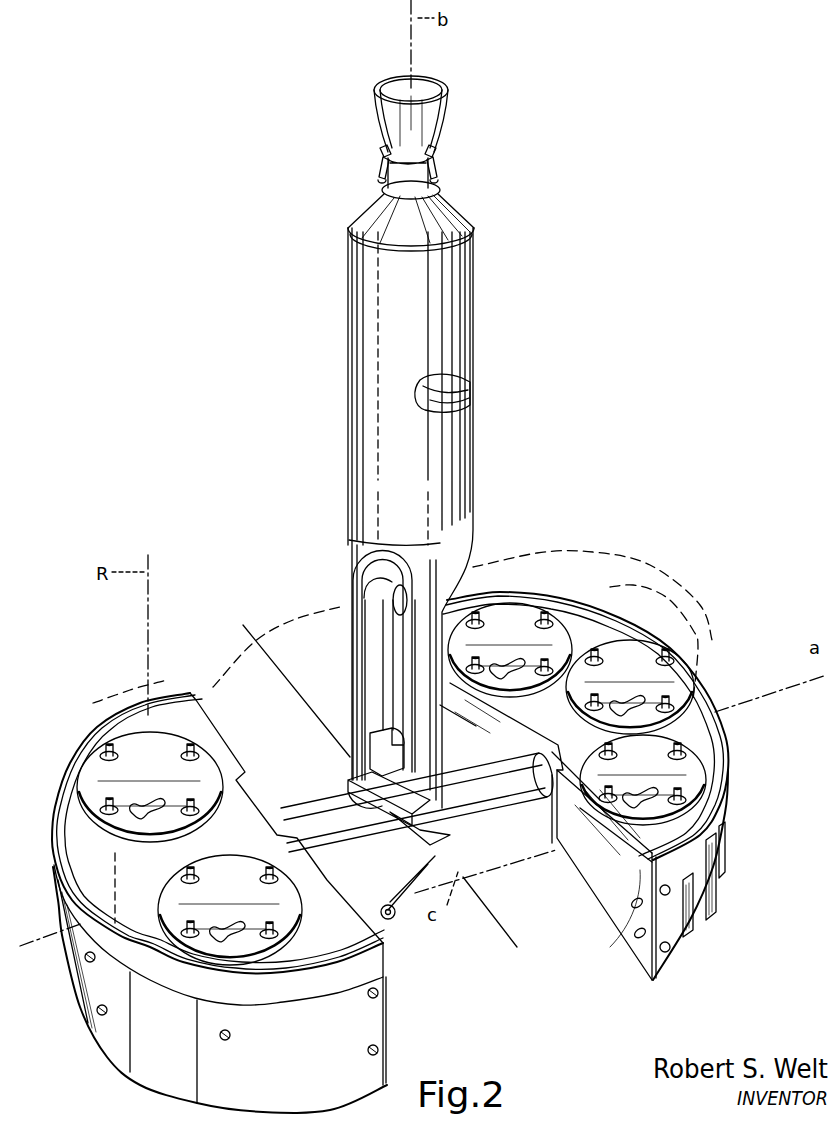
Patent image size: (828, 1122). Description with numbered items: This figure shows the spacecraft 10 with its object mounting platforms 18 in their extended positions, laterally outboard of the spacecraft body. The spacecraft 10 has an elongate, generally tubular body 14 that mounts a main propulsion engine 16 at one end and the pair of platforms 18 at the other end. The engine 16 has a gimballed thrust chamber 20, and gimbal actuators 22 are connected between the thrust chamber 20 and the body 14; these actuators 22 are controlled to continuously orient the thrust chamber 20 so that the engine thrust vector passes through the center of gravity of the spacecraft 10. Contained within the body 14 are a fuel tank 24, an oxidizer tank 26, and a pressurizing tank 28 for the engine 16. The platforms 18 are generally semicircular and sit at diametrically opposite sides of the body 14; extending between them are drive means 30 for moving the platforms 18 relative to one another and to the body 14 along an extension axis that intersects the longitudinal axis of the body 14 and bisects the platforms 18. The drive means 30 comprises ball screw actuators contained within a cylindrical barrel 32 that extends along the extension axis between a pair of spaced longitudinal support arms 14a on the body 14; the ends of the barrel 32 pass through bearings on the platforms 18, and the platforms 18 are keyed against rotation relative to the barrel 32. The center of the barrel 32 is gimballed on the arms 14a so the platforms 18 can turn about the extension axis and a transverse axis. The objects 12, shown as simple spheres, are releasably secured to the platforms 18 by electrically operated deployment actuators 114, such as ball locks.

The spacecraft 10 is at (505, 330).
The objects 12 is at (615, 587).
The spacecraft body 14 is at (350, 383).
The longitudinal support arms 14a is at (380, 651).
The main propulsion engine 16 is at (374, 114).
The object mounting platforms 18 is at (705, 920).
The gimballed thrust chamber 20 is at (450, 125).
The gimbal actuators 22 is at (383, 163).
The fuel tank 24 is at (458, 382).
The oxidizer tank 26 is at (470, 398).
The pressurizing tank 28 is at (353, 582).
The drive means 30 is at (512, 848).
The cylindrical barrel 32 is at (504, 790).
The deployment actuators 114 is at (391, 784).